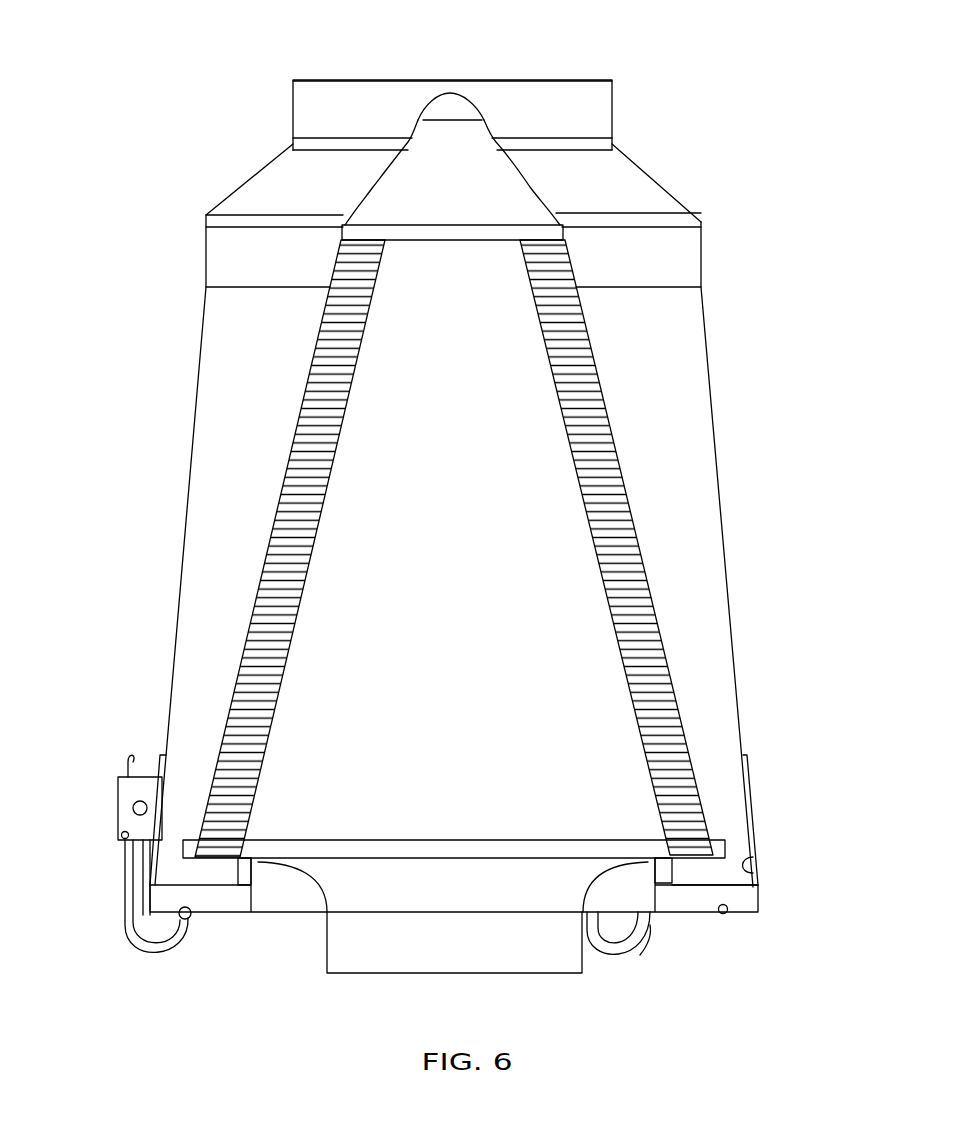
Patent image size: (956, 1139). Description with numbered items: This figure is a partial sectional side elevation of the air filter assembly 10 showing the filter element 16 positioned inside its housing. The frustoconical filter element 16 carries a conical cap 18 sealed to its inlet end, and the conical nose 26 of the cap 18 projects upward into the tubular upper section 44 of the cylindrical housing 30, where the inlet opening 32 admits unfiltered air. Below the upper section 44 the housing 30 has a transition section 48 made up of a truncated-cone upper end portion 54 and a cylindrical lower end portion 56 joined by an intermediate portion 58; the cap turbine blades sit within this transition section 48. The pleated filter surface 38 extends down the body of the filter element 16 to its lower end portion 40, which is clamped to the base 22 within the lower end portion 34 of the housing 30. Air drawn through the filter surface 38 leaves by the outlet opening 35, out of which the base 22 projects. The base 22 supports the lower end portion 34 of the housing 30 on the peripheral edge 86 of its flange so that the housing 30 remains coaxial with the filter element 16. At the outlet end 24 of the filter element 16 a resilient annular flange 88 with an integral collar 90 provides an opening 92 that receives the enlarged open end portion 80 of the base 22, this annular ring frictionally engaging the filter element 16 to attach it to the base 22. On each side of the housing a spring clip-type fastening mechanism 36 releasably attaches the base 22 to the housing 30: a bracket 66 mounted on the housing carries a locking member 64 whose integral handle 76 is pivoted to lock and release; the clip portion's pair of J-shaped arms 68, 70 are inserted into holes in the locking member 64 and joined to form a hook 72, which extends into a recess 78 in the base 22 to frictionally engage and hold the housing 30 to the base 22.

The filter assembly 10 is at (158, 166).
The filter element 16 is at (585, 322).
The conical cap 18 is at (500, 180).
The base 22 is at (520, 984).
The outlet end 24 is at (290, 843).
The conical nose 26 is at (452, 100).
The cylindrical housing 30 is at (714, 578).
The inlet opening 32 is at (510, 78).
The lower end portion 34 is at (752, 760).
The outlet opening 35 is at (754, 862).
The spring clip-type fastening mechanism 36 is at (105, 804).
The filter surface 38 is at (305, 400).
The lower end portion 40 is at (712, 812).
The upper section 44 is at (291, 103).
The transition section 48 is at (653, 172).
The upper end portion 54 is at (293, 142).
The lower end portion 56 is at (217, 268).
The intermediate portion 58 is at (210, 217).
The locking member 64 is at (120, 830).
The bracket 66 is at (160, 757).
The J-shaped arm 68 is at (643, 955).
The J-shaped arm 70 is at (125, 900).
The hook 72 is at (185, 925).
The handle 76 is at (125, 758).
The recess 78 is at (725, 913).
The enlarged open end portion 80 is at (445, 840).
The peripheral edge 86 is at (758, 895).
The resilient annular flange 88 is at (172, 840).
The collar 90 is at (240, 870).
The opening 92 is at (258, 893).